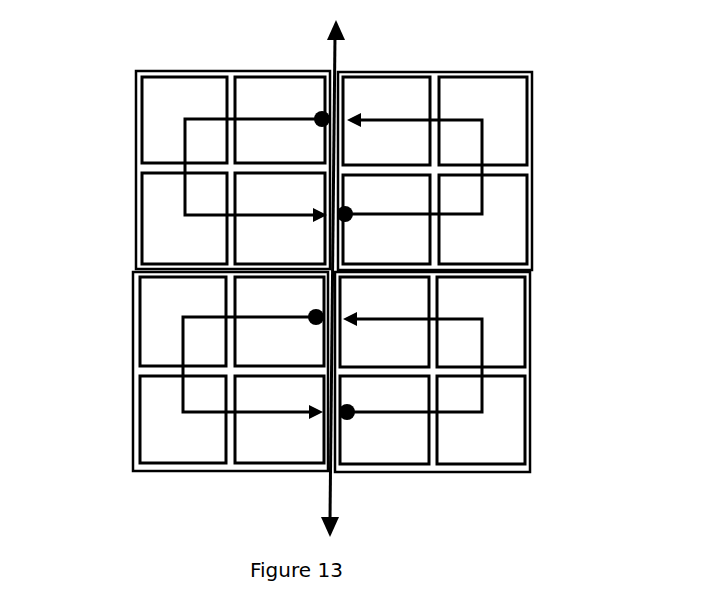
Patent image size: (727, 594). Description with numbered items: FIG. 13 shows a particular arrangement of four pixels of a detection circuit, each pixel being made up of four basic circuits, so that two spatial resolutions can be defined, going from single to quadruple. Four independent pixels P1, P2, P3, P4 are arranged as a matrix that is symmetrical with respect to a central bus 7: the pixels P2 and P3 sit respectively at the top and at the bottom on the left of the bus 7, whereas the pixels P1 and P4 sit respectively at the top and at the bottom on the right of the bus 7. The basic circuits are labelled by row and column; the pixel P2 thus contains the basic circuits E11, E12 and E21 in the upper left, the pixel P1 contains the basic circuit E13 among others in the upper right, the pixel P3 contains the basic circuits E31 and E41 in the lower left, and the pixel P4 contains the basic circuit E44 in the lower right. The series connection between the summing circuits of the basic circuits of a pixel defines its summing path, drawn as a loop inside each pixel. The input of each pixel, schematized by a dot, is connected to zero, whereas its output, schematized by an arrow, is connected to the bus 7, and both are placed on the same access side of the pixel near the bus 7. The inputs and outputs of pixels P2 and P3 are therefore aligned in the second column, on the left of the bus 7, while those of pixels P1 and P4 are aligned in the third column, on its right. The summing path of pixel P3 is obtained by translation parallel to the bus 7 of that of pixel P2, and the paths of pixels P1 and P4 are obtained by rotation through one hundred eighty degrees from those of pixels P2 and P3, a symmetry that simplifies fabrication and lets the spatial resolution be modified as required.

The bus 7 is at (332, 509).
The pixel P1 is at (532, 170).
The pixel P2 is at (135, 168).
The pixel P3 is at (137, 368).
The pixel P4 is at (532, 370).
The basic circuit E11 is at (162, 132).
The basic circuit E12 is at (280, 92).
The basic circuit E13 is at (390, 92).
The basic circuit E21 is at (162, 227).
The basic circuit E31 is at (137, 322).
The basic circuit E41 is at (137, 415).
The basic circuit E44 is at (505, 423).